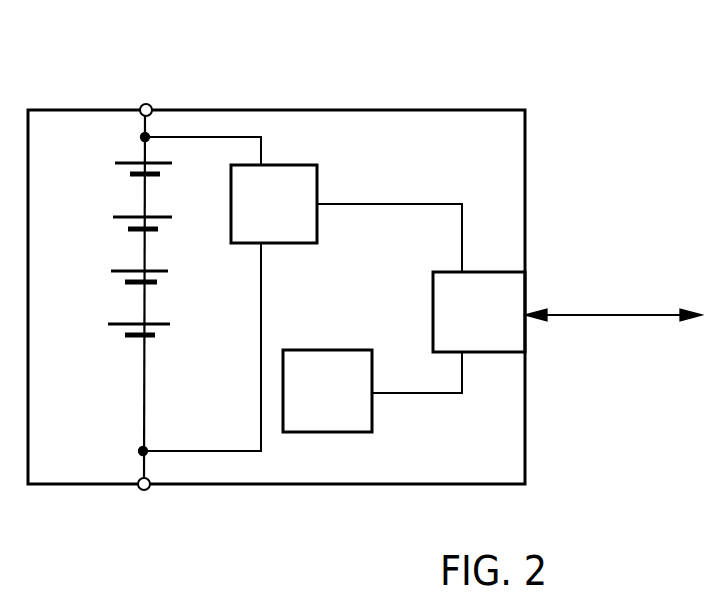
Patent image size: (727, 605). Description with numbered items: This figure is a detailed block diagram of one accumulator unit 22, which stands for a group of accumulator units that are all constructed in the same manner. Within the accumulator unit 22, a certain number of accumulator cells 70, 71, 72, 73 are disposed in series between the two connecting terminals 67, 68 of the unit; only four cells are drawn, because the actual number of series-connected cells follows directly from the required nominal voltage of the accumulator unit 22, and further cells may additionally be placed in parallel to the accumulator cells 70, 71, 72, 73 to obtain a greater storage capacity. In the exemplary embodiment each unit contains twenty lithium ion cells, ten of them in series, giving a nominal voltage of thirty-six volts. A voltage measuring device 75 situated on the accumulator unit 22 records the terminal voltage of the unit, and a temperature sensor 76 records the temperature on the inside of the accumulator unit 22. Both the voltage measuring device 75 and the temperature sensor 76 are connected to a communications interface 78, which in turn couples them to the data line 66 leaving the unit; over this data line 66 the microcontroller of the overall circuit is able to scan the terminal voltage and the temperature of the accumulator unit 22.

The accumulator unit 22 is at (472, 110).
The data line 66 is at (638, 313).
The connecting terminal 67 is at (140, 492).
The connecting terminal 68 is at (142, 105).
The accumulator cell 70 is at (128, 171).
The accumulator cell 71 is at (130, 223).
The accumulator cell 72 is at (125, 278).
The accumulator cell 73 is at (128, 331).
The voltage measuring device 75 is at (317, 178).
The temperature sensor 76 is at (330, 350).
The communications interface 78 is at (480, 353).